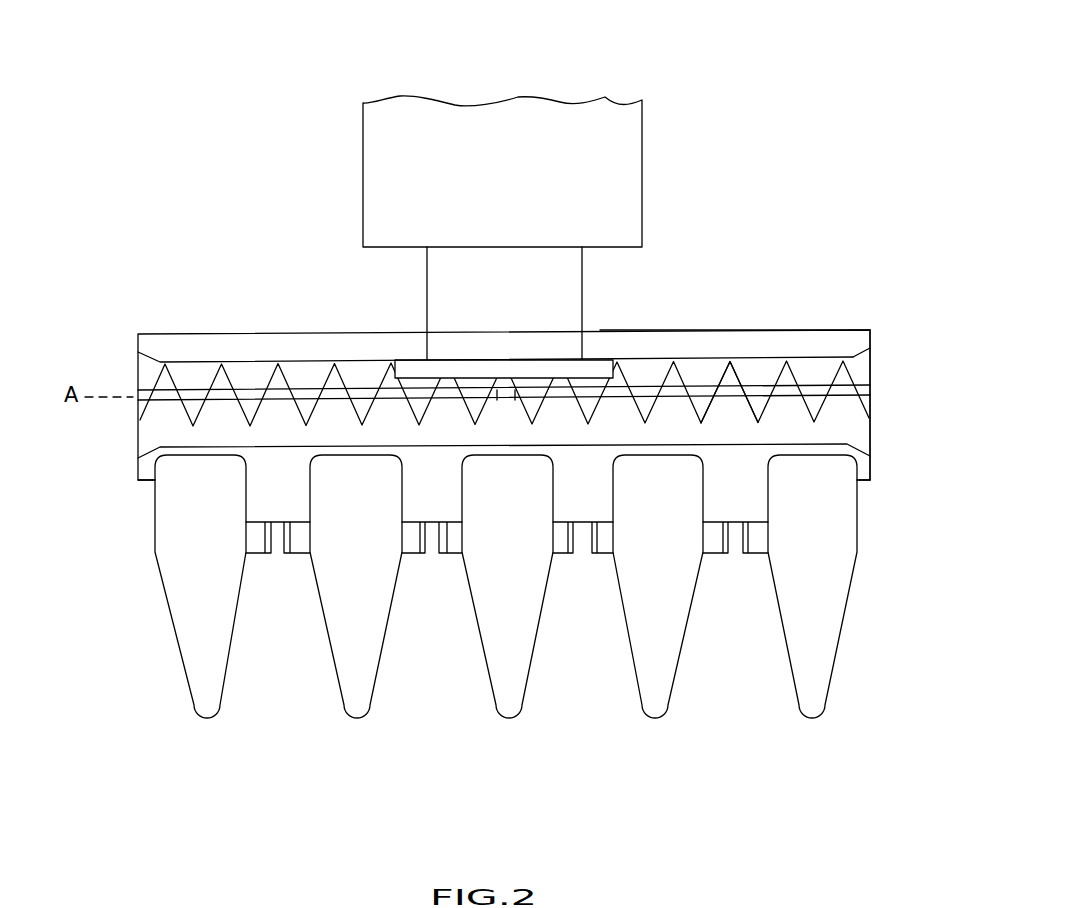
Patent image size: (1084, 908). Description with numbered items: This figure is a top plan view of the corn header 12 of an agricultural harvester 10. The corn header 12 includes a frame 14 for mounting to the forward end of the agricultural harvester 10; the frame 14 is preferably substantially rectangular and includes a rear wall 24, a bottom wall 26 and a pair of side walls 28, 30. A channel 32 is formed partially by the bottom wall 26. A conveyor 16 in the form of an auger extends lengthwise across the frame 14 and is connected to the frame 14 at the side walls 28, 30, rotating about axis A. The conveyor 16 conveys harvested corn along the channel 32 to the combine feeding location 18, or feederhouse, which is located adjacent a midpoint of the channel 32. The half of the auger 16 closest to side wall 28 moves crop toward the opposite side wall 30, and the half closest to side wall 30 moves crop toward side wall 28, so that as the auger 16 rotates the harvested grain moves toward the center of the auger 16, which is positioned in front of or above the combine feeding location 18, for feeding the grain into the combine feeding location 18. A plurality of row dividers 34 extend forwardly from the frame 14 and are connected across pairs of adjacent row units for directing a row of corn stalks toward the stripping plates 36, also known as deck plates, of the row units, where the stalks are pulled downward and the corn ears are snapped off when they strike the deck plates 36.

The agricultural harvester 10 is at (605, 46).
The corn header 12 is at (135, 768).
The frame 14 is at (168, 335).
The conveyor 16 is at (247, 398).
The combine feeding location 18 is at (537, 360).
The rear wall 24 is at (700, 328).
The bottom wall 26 is at (735, 420).
The side wall 28 is at (138, 362).
The side wall 30 is at (871, 373).
The channel 32 is at (862, 373).
The row dividers 34 is at (225, 678).
The stripping plates 36 is at (760, 555).